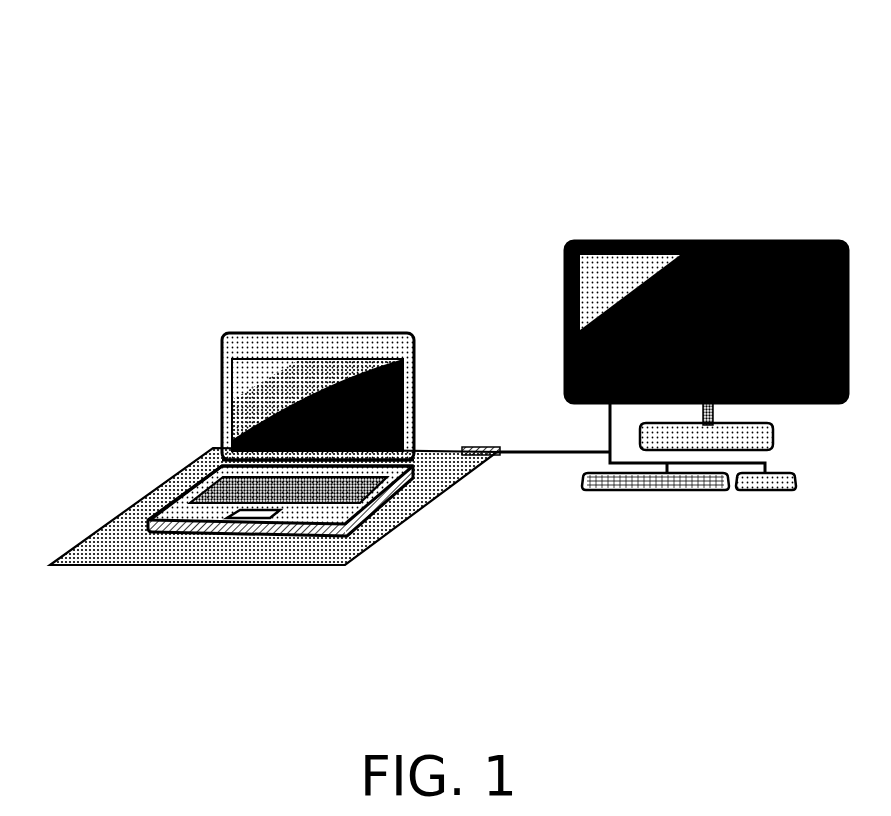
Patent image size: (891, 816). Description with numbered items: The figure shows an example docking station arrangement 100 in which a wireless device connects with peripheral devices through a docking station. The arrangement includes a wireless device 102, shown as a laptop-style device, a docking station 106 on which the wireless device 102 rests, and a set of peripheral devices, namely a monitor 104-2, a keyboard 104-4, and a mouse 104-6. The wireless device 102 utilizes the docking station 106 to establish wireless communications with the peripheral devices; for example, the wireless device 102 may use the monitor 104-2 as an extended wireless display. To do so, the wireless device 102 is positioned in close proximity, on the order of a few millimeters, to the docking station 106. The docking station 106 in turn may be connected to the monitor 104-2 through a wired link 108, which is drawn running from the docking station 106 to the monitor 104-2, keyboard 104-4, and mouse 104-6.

The docking station arrangement 100 is at (392, 77).
The wireless device 102 is at (220, 412).
The monitor 104-2 is at (682, 198).
The keyboard 104-4 is at (668, 498).
The mouse 104-6 is at (777, 500).
The docking station 106 is at (388, 530).
The wired link 108 is at (563, 447).